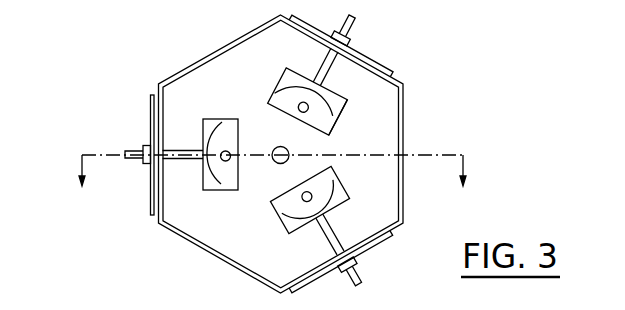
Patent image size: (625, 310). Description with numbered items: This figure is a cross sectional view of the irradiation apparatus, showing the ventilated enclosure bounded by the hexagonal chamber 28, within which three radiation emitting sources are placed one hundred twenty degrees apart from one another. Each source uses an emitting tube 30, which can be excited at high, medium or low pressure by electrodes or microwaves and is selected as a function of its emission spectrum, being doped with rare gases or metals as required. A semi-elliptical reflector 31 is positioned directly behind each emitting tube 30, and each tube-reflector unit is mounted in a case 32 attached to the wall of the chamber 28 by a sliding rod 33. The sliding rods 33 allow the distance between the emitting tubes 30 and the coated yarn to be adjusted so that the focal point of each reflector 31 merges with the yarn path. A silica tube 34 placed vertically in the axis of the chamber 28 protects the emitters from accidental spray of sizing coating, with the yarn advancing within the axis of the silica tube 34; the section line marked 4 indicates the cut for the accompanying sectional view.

The hexagonal chamber 28 is at (405, 134).
The emitting tube 30 is at (298, 111).
The semi-elliptical reflector 31 is at (333, 92).
The case 32 is at (340, 123).
The sliding rod 33 is at (354, 30).
The silica tube 34 is at (276, 164).
The section line 4- 4 is at (273, 172).